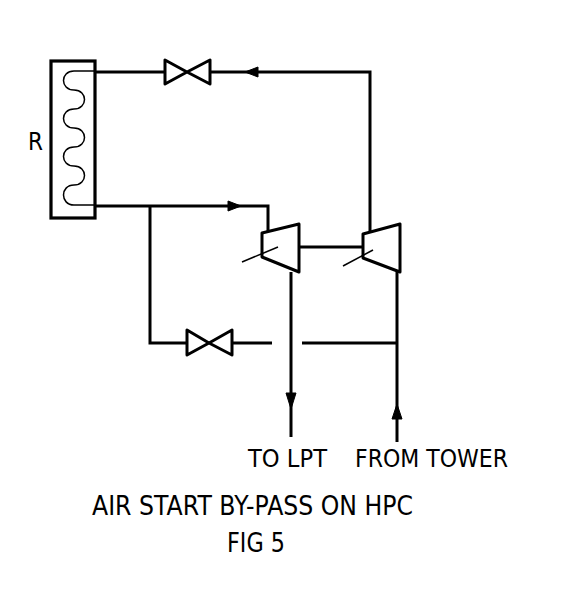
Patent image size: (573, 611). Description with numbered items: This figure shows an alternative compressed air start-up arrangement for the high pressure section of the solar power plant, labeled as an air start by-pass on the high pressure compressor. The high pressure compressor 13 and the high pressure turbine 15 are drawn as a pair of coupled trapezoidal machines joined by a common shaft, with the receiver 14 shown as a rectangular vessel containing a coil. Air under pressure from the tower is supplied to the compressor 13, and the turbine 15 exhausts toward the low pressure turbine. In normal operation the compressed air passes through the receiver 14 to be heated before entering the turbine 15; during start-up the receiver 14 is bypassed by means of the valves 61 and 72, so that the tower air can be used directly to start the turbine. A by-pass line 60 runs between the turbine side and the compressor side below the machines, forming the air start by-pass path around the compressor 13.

The high pressure compressor (HPC) 13 is at (397, 221).
The solar receiver 14 is at (84, 60).
The high pressure turbine (HPT) 15 is at (297, 221).
The air start by-pass line 60 is at (337, 342).
The valve 61 is at (232, 330).
The valve 72 is at (201, 57).